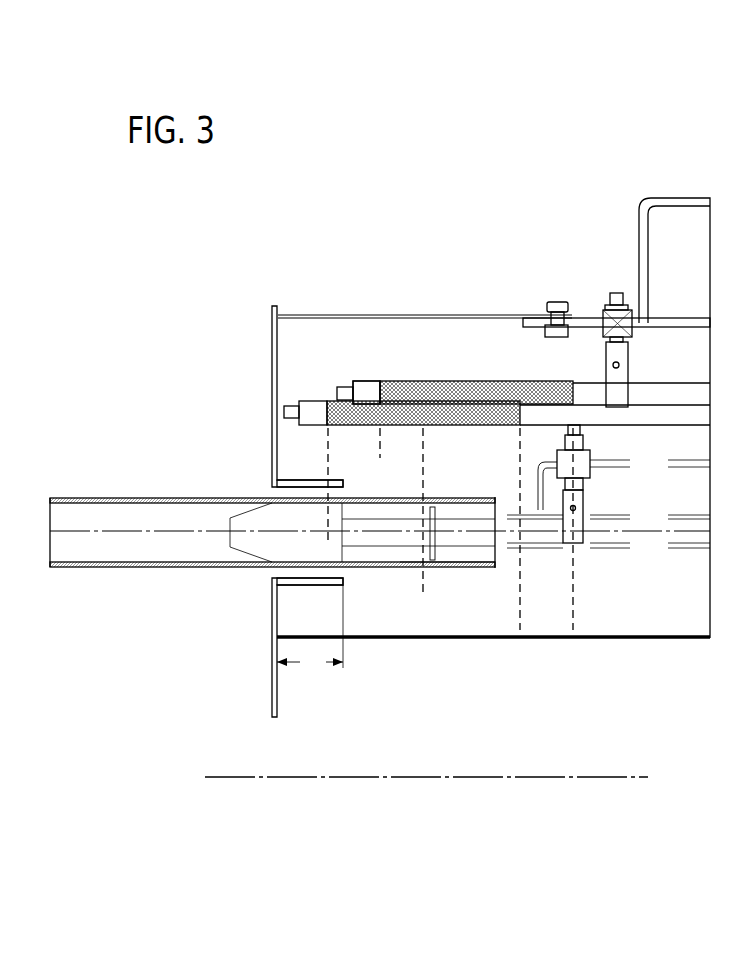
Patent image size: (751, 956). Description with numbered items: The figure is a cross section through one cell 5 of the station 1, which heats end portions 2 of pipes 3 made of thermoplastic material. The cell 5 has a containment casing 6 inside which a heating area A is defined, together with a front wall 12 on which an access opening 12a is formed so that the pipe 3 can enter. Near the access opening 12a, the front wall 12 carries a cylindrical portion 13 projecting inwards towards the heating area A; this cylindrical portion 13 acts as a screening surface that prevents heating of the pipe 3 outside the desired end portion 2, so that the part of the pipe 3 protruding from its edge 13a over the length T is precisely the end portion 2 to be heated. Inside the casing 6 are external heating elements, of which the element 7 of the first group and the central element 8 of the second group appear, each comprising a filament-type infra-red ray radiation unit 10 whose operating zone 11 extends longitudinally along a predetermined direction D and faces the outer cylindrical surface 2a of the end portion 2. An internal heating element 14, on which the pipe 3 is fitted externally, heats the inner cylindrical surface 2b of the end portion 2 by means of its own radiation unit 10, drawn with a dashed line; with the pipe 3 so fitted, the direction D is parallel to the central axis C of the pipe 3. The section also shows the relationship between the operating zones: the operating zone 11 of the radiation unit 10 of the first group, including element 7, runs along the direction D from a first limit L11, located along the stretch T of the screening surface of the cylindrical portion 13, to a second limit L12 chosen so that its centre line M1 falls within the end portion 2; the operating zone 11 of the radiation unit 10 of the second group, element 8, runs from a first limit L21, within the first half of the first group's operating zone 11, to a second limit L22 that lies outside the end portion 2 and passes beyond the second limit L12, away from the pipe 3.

The station 1 is at (233, 258).
The end portion 2 is at (399, 573).
The outer cylindrical surface 2a is at (450, 573).
The inner cylindrical surface 2b is at (480, 507).
The pipe 3 is at (137, 497).
The cell 5 is at (225, 388).
The containment casing 6 is at (300, 313).
The heating element 7 is at (293, 395).
The heating element 8 is at (367, 375).
The infra-red ray radiation unit 10 is at (435, 380).
The operating zone 11 is at (465, 412).
The front wall 12 is at (268, 625).
The access opening 12a is at (268, 492).
The cylindrical portion 13 is at (303, 585).
The edge 13a is at (350, 585).
The internal heating element 14 is at (473, 550).
The heating area A is at (400, 338).
The central axis C is at (110, 540).
The predetermined direction D is at (223, 777).
The length T is at (310, 629).
The first limit L11 is at (327, 452).
The second limit L12 is at (522, 590).
The first limit L21 is at (380, 450).
The second limit L22 is at (576, 592).
The centre line M1 is at (427, 442).